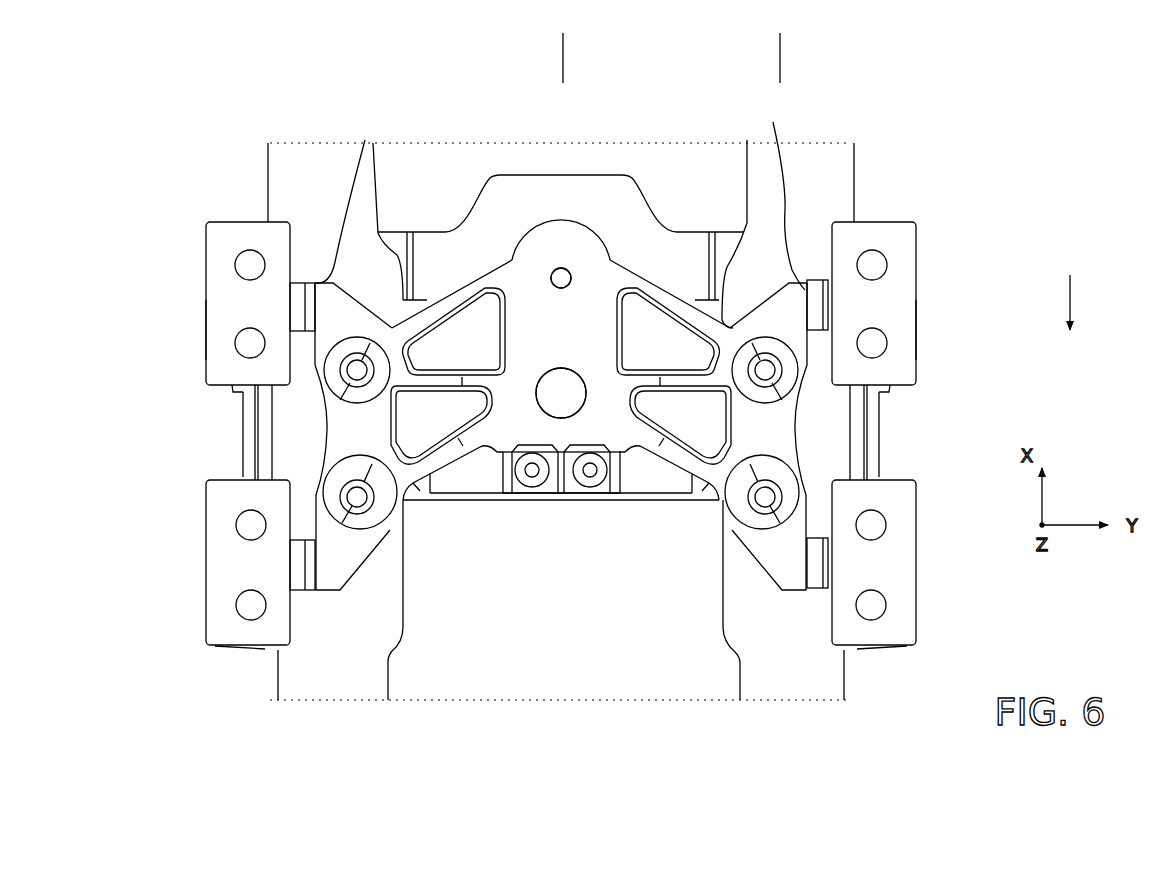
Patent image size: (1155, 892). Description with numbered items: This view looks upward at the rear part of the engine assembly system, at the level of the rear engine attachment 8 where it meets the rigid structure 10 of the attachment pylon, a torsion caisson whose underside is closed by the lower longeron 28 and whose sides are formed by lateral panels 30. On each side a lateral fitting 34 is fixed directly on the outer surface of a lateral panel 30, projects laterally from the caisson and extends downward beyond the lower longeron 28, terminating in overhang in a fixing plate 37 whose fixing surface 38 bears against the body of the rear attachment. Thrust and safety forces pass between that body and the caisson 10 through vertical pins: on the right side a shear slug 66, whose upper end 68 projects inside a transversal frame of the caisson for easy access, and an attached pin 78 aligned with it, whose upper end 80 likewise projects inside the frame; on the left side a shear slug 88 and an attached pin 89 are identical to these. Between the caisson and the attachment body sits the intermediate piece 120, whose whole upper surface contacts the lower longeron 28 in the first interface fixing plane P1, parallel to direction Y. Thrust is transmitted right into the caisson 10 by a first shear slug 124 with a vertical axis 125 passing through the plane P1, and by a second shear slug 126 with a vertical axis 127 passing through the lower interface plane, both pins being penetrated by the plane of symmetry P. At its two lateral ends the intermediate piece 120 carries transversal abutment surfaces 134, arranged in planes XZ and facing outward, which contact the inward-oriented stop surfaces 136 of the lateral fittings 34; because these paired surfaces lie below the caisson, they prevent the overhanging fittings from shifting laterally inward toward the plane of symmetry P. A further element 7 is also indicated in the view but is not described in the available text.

The section view direction 7 is at (1070, 290).
The rear engine attachment 8 is at (338, 706).
The rigid structure 10 is at (846, 137).
The lower longeron 28 is at (420, 185).
The lateral panel 30 is at (268, 175).
The lateral fitting 34 is at (203, 260).
The fixing plate 37 is at (210, 326).
The fixing surface 38 is at (232, 230).
The shear slug 66 is at (320, 492).
The upper end 68 is at (757, 500).
The attached pin 78 is at (758, 337).
The upper end 80 is at (768, 378).
The shear slug 88 is at (375, 518).
The attached pin 89 is at (357, 336).
The intermediate piece 120 is at (567, 223).
The first shear slug 124 is at (540, 368).
The vertical axis 125 is at (561, 392).
The second shear slug 126 is at (551, 265).
The vertical axis 127 is at (564, 276).
The transversal abutment surfaces 134 is at (300, 317).
The stop surfaces 136 is at (366, 140).
The plane of symmetry P is at (563, 50).
The first interface fixing plane P1 is at (780, 50).